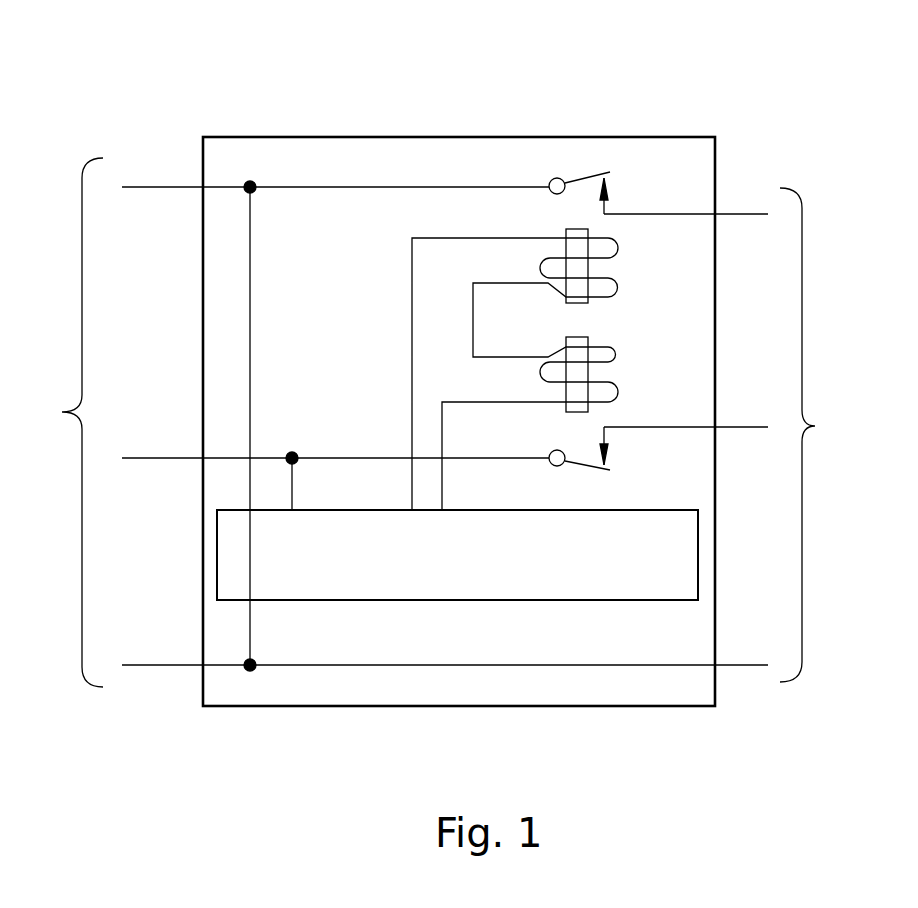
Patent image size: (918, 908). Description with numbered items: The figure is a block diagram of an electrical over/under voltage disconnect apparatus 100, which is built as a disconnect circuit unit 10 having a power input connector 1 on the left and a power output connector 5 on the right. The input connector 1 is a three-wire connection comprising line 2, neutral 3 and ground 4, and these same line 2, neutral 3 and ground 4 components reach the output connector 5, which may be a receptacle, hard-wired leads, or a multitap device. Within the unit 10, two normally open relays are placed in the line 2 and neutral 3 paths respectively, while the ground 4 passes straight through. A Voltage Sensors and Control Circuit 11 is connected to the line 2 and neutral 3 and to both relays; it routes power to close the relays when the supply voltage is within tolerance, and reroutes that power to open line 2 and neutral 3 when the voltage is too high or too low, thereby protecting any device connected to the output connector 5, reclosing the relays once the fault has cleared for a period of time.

The electrical over/under voltage disconnect apparatus 100 is at (482, 72).
The disconnect circuit unit 10 is at (715, 182).
The Voltage Sensors and Control Circuit 11 is at (577, 600).
The power input connector 1 is at (78, 422).
The line 2 is at (150, 187).
The neutral 3 is at (137, 458).
The ground 4 is at (162, 665).
The power output connector 5 is at (805, 435).